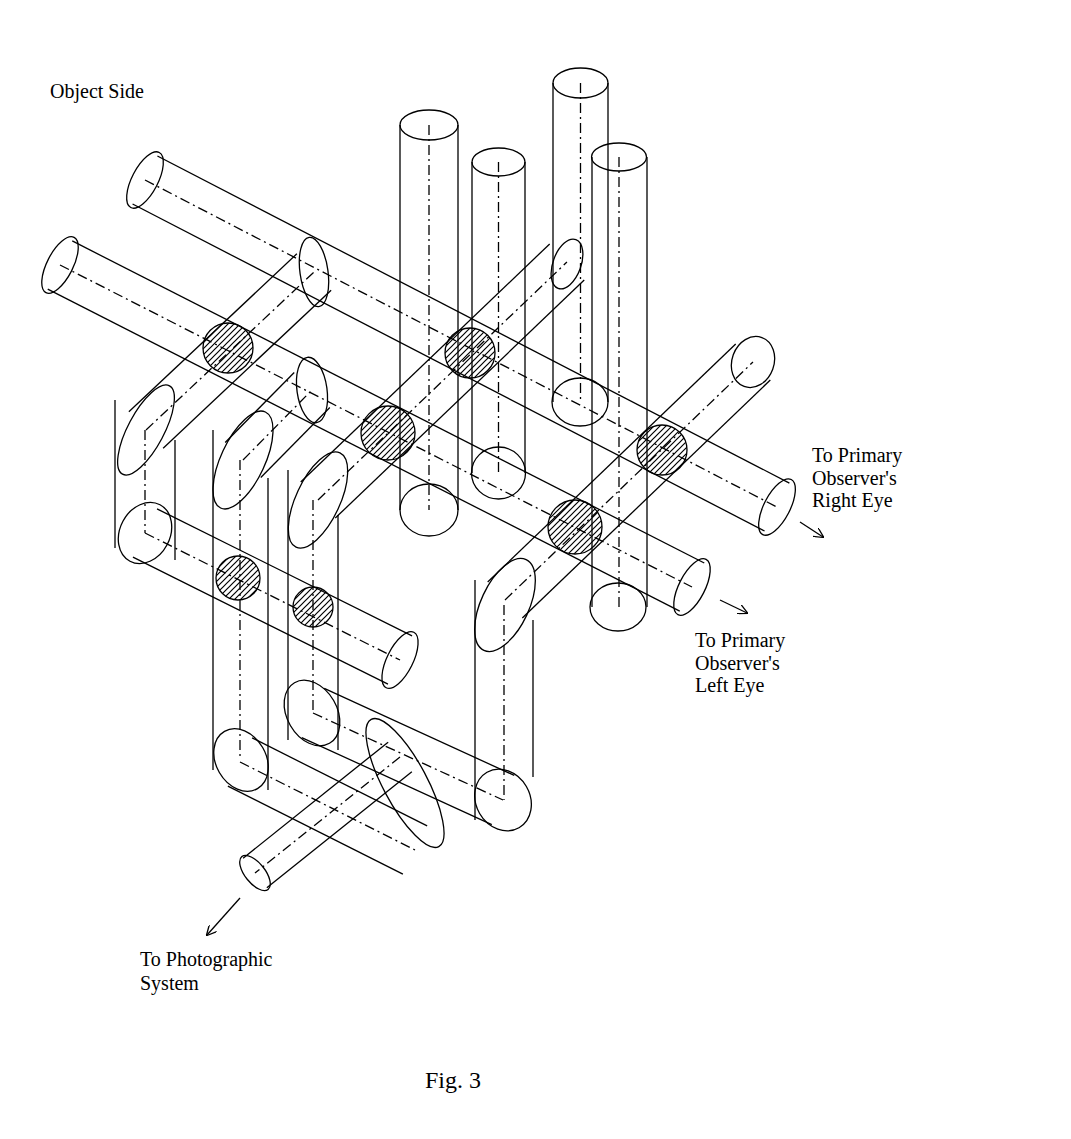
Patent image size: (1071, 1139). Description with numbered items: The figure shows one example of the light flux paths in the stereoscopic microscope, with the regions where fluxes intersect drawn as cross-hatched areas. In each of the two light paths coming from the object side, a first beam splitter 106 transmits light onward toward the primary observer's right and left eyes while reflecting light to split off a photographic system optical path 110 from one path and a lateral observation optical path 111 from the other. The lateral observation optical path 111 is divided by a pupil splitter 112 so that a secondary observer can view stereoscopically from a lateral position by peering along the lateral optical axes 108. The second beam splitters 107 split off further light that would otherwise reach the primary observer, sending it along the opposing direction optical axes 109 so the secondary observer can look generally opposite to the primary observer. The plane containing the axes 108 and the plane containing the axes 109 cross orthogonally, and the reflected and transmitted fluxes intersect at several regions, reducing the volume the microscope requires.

The first beam splitter 106 is at (310, 358).
The second beam splitter 107 is at (455, 483).
The lateral optical axes 108 is at (618, 210).
The opposing direction optical axes 109 is at (580, 137).
The photographic system optical path 110 is at (183, 577).
The lateral observation optical path 111 is at (222, 690).
The pupil splitter 112 is at (418, 740).